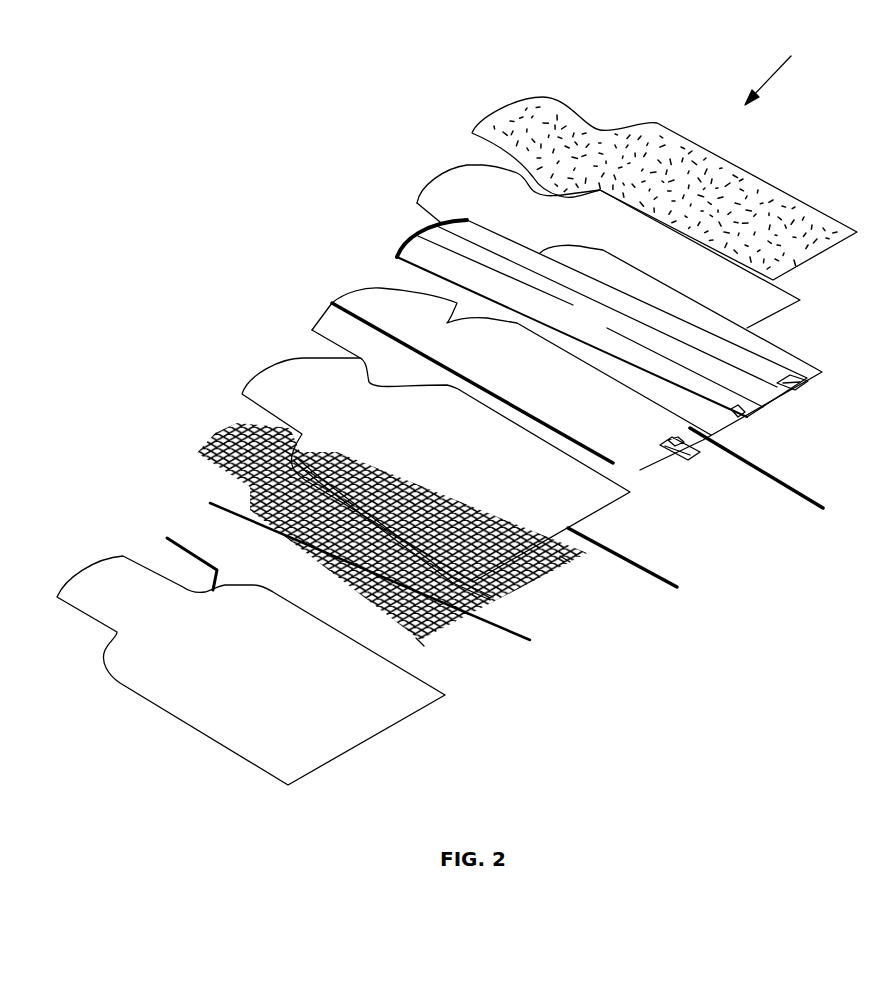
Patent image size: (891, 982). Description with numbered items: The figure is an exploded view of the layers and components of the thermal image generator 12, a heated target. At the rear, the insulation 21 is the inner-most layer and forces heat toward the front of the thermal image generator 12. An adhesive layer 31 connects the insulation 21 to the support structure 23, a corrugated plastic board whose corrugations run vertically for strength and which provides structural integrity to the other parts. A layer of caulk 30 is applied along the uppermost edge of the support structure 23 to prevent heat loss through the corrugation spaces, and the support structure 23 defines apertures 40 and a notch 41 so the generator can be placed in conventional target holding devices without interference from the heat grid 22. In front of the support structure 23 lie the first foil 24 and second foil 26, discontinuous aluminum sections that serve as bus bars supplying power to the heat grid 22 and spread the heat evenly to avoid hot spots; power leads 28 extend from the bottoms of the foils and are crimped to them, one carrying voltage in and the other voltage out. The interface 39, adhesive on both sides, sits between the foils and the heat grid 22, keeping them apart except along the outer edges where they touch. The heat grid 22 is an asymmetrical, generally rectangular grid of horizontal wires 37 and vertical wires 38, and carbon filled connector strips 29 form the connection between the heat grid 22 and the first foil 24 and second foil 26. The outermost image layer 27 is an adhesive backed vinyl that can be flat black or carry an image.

The thermal image generator 12 is at (815, 50).
The insulation 21 is at (676, 181).
The adhesive layer 31 is at (630, 240).
The caulk 30 is at (418, 233).
The support structure 23 is at (605, 321).
The first foil 24 is at (541, 386).
The second foil 26 is at (410, 376).
The power leads 28 is at (755, 470).
The apertures 40 is at (797, 388).
The notch 41 is at (737, 417).
The interface 39 is at (466, 443).
The heat grid 22 is at (598, 638).
The connector strips 29 is at (180, 545).
The horizontal wires 37 is at (428, 650).
The vertical wires 38 is at (566, 562).
The image layer 27 is at (260, 683).